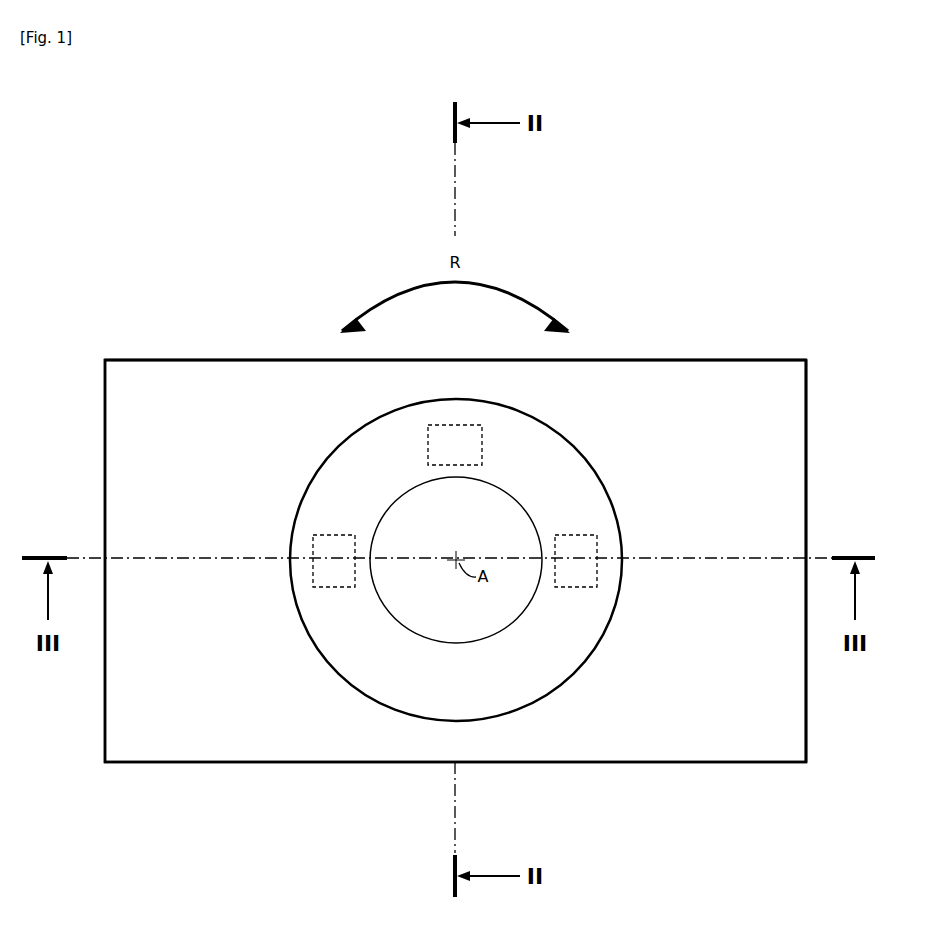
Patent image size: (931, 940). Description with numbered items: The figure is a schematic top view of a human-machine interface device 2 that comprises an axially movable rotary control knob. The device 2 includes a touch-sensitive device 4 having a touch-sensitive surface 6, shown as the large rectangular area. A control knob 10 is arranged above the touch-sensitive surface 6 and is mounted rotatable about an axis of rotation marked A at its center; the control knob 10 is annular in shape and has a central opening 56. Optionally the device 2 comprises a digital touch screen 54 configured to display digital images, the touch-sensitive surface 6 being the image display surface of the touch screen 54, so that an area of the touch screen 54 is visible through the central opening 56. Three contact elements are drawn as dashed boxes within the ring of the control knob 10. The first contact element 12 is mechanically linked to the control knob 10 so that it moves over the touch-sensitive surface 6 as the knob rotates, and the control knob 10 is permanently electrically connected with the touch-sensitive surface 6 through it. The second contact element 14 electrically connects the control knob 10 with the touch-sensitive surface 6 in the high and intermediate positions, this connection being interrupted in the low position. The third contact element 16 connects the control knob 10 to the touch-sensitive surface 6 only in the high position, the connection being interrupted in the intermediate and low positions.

The human-machine interface device 2 is at (663, 200).
The touch-sensitive device 4 is at (679, 350).
The touch-sensitive surface 6 is at (755, 385).
The control knob 10 is at (600, 672).
The first contact element 12 is at (461, 437).
The second contact element 14 is at (313, 575).
The third contact element 16 is at (598, 578).
The digital touch screen 54 is at (808, 423).
The central opening 56 is at (507, 500).